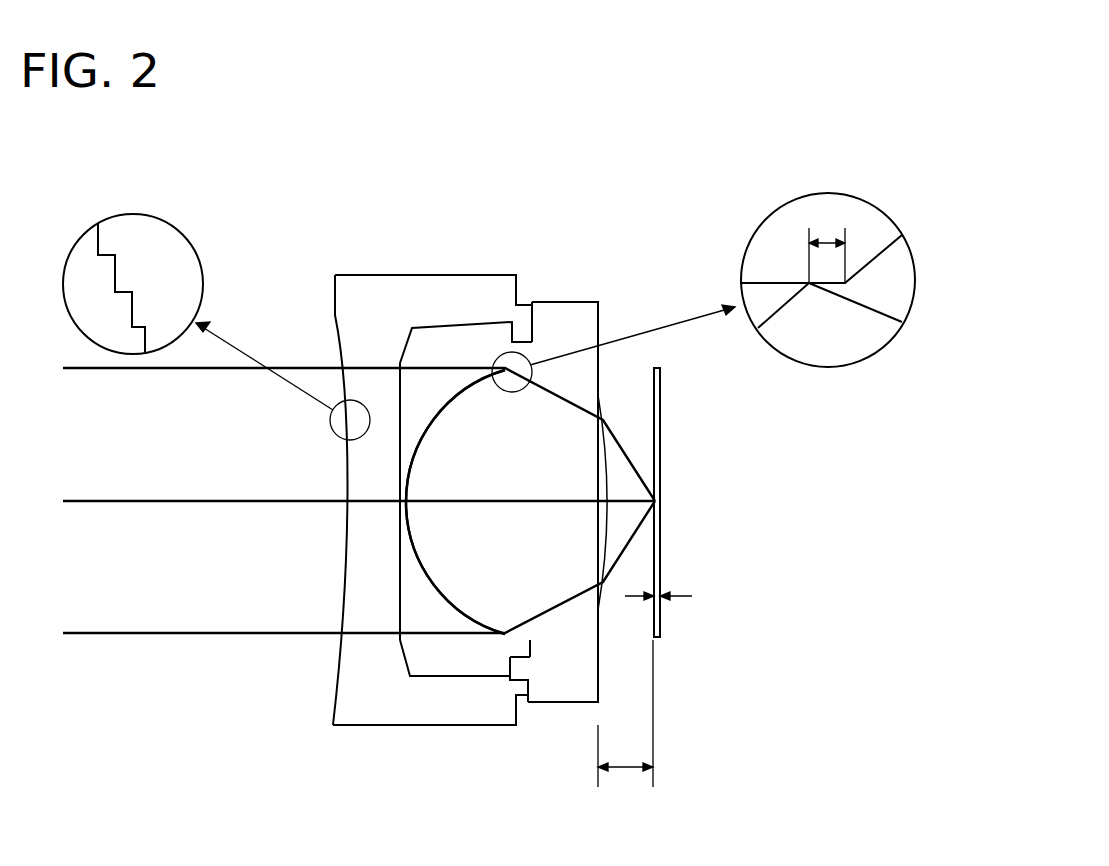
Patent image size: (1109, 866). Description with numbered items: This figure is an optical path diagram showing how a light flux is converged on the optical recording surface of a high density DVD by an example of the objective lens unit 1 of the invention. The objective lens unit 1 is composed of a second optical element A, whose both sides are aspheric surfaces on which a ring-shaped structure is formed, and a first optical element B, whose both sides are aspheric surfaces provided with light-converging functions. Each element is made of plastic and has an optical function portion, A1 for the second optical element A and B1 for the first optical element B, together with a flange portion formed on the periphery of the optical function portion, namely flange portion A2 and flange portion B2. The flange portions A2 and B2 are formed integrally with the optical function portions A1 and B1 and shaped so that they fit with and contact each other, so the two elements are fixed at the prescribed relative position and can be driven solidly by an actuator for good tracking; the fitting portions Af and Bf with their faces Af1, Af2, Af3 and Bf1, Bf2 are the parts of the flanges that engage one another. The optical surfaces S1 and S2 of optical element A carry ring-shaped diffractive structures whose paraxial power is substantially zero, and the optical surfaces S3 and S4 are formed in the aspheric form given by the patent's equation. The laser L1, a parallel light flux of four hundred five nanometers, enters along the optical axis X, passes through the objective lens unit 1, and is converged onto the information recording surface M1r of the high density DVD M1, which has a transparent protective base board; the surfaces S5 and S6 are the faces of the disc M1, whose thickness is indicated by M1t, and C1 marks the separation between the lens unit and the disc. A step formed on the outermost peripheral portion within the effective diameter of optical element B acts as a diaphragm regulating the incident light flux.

The objective lens unit 1 is at (453, 183).
The second optical element A is at (472, 298).
The first optical element B is at (552, 298).
The optical function portion A1 is at (350, 577).
The flange portion A2 is at (492, 298).
The optical function portion B1 is at (443, 573).
The flange portion B2 is at (587, 298).
The optical surface S1 is at (340, 400).
The optical surface S2 is at (400, 363).
The optical surface S3 is at (465, 390).
The optical surface S4 is at (603, 402).
The fifth surface (mirror front) S5 is at (652, 447).
The sixth surface (mirror back) S6 is at (662, 408).
The optical axis X is at (120, 503).
The laser L1 is at (133, 617).
The high density DVD M1 is at (658, 638).
The information recording surface M1r is at (662, 520).
The mirror thickness M1t is at (684, 597).
The fitting portion of element A Af is at (522, 696).
The first fitting face of element A Af1 is at (530, 654).
The second fitting face of element A Af2 is at (530, 690).
The third fitting face of element A Af3 is at (526, 692).
The fitting portion of element B Bf is at (527, 668).
The first fitting face of element B Bf1 is at (512, 686).
The second fitting face of element B Bf2 is at (518, 684).
The distance between element B and mirror C1 is at (625, 724).